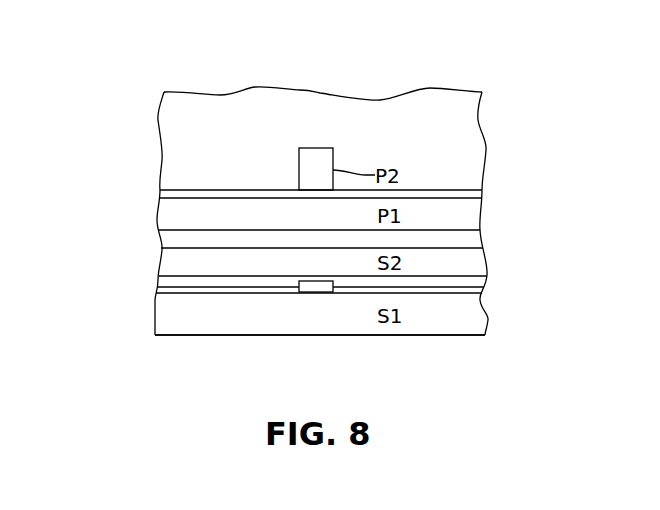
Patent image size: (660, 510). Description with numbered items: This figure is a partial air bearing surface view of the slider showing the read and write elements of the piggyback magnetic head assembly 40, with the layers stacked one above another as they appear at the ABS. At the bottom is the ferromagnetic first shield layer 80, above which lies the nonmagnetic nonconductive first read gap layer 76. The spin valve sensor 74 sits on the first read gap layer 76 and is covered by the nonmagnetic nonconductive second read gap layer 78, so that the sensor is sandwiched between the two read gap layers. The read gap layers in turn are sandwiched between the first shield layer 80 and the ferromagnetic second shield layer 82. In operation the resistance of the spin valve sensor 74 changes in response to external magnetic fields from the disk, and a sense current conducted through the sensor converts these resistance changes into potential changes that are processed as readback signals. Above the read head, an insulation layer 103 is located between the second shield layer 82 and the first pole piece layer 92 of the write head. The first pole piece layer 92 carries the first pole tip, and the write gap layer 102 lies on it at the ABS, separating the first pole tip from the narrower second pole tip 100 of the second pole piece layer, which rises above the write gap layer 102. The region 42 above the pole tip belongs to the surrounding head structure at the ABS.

The piggyback magnetic head assembly 40 is at (512, 102).
The top layer 42 is at (170, 120).
The second pole tip 100 is at (313, 157).
The write gap layer 102 is at (233, 192).
The first pole piece layer 92 is at (170, 215).
The insulation layer 103 is at (473, 240).
The second shield layer 82 is at (170, 265).
The second read gap layer 78 is at (443, 282).
The spin valve sensor 74 is at (313, 288).
The first read gap layer 76 is at (222, 293).
The first shield layer 80 is at (473, 318).